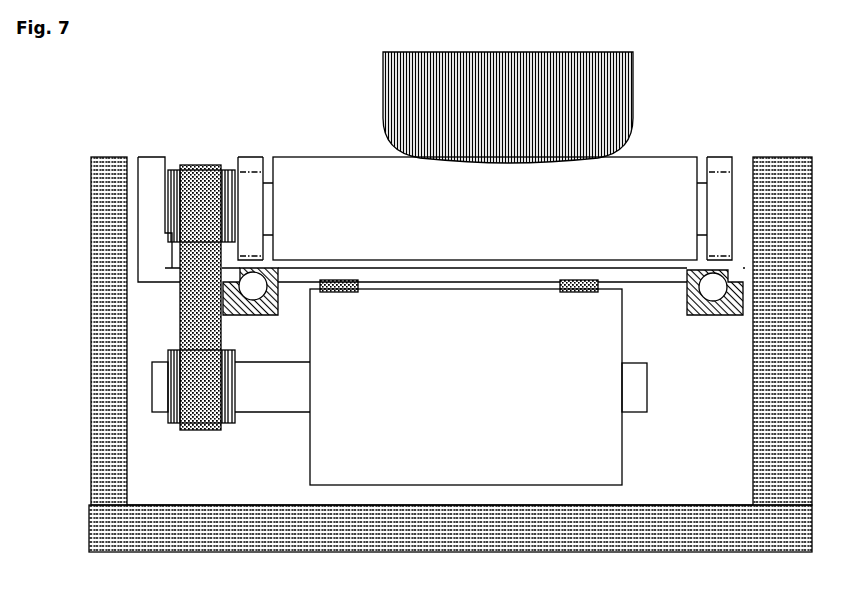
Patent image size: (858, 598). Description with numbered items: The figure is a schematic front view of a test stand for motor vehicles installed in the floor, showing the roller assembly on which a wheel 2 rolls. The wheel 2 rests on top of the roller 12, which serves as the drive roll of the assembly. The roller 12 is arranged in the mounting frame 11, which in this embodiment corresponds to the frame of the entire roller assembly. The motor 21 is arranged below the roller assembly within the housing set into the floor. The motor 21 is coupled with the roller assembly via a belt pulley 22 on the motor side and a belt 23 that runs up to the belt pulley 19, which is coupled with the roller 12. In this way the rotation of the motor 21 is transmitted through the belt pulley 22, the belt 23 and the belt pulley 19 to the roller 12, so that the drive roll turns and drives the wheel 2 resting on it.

The wheel 2 is at (508, 107).
The mounting frame 11 is at (720, 172).
The roller 12 is at (287, 170).
The belt pulley 19 is at (162, 167).
The motor 21 is at (597, 465).
The belt pulley 22 is at (170, 415).
The belt 23 is at (197, 168).